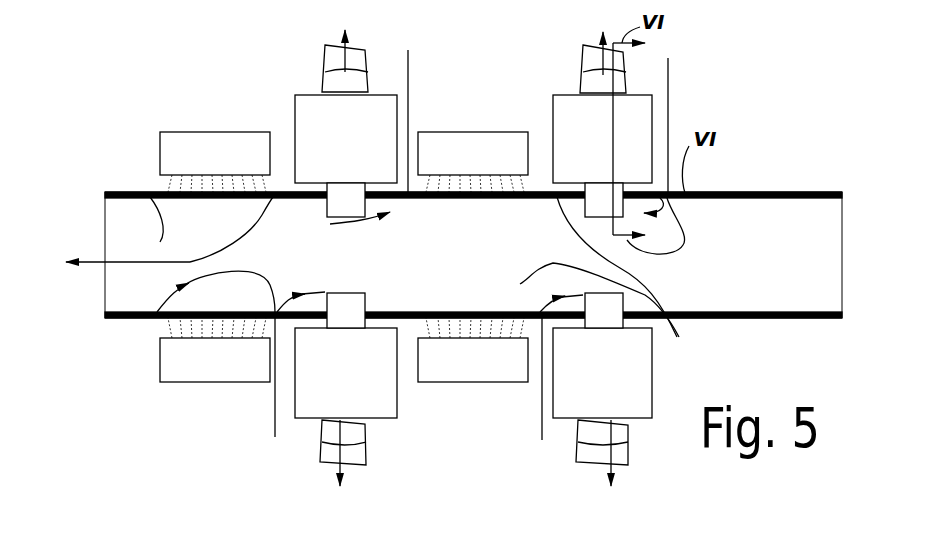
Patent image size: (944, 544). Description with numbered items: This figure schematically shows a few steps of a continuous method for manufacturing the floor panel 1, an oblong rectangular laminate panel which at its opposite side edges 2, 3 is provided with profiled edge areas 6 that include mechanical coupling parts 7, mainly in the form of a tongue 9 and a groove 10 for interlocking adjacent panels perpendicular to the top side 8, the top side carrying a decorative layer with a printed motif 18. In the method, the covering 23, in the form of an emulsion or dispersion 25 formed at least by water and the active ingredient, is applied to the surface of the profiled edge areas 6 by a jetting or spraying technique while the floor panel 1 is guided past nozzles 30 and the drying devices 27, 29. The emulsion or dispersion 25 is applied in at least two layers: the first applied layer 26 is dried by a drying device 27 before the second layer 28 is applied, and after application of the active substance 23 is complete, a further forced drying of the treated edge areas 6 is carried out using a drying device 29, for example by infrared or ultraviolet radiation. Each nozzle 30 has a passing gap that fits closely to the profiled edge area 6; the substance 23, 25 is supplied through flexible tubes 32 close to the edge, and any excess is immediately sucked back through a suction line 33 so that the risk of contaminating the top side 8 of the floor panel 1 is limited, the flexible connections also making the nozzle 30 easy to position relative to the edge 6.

The floor panel 1 is at (744, 167).
The side edge 2 is at (762, 190).
The side edge 3 is at (737, 322).
The profiled edge area 6 is at (125, 192).
The mechanical coupling parts 7 is at (742, 193).
The top side 8 is at (150, 196).
The tongue 9 is at (282, 192).
The groove 10 is at (406, 320).
The printed motif 18 is at (155, 318).
The covering 23 is at (147, 192).
The emulsion or dispersion 25 is at (287, 192).
The first applied layer 26 is at (609, 280).
The drying device 27 is at (466, 153).
The second layer 28 is at (210, 268).
The drying device 29 is at (195, 150).
The nozzle 30 is at (372, 100).
The flexible tube 32 is at (409, 58).
The suction line 33 is at (330, 53).